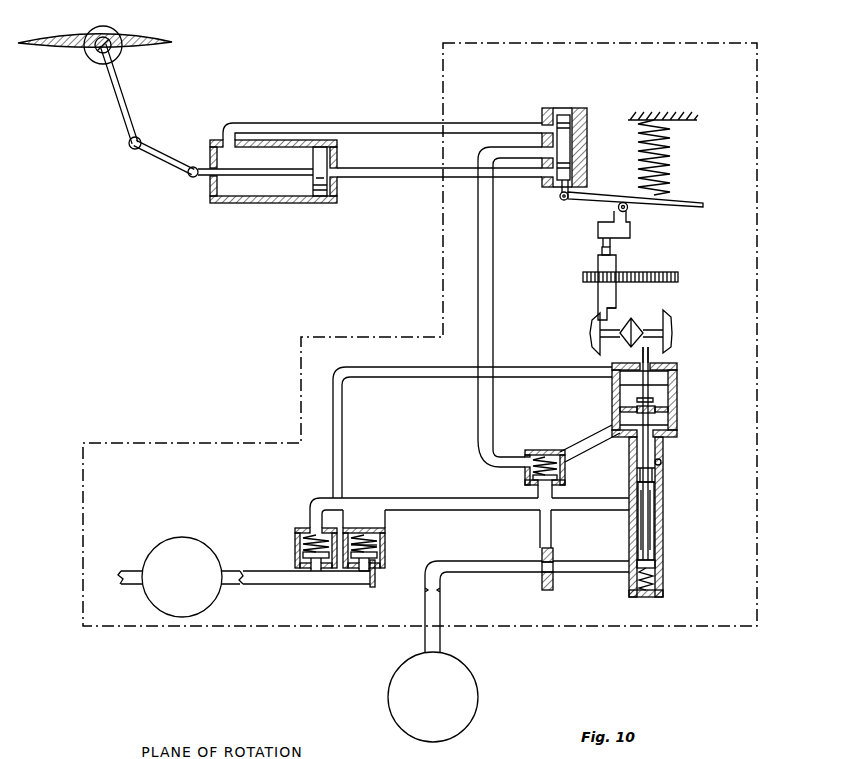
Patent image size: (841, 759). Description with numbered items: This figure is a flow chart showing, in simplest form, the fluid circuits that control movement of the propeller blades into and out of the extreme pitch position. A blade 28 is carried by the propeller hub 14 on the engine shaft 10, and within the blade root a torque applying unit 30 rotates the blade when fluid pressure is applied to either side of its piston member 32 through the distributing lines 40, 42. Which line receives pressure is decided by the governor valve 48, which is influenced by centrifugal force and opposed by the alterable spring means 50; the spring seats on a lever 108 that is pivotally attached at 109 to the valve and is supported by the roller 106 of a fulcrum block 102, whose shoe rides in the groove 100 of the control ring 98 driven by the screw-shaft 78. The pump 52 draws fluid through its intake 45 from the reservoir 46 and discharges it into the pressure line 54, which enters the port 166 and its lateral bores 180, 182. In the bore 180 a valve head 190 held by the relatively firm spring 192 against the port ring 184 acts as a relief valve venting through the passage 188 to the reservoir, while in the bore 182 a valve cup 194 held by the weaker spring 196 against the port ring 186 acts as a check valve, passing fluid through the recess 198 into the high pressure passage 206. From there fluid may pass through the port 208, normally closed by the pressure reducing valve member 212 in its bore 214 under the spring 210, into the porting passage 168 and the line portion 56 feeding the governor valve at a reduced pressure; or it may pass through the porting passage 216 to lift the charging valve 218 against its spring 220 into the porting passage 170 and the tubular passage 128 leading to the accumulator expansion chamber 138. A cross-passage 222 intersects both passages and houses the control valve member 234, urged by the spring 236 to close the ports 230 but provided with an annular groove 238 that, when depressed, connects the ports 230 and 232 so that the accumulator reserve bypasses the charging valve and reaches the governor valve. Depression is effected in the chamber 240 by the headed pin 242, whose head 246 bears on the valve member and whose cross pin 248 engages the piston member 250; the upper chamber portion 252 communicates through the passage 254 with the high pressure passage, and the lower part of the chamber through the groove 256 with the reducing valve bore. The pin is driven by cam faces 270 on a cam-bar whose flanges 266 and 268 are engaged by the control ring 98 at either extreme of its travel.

The engine shaft 10 is at (98, 50).
The propeller hub 14 is at (112, 27).
The blades 28 is at (172, 41).
The servo-motor or torque applying unit 30 is at (265, 204).
The piston member 32 is at (313, 204).
The distributing line 40 is at (470, 128).
The distributing line 42 is at (457, 178).
The intake 45 is at (118, 574).
The reservoir 46 is at (152, 450).
The governor valve 48 is at (565, 120).
The alterable spring means 50 is at (661, 145).
The pump 52 is at (177, 545).
The pressure line 54 is at (263, 586).
The pressure line portion 56 is at (483, 250).
The screw-shaft 78 is at (670, 272).
The control ring 98 is at (598, 260).
The groove 100 is at (605, 310).
The fulcrum block 102 is at (631, 230).
The roller 106 is at (629, 209).
The lever 108 is at (690, 201).
The pivot 109 is at (564, 200).
The tubular lining 128 is at (441, 637).
The expansion chamber 138 is at (462, 675).
The port 166 is at (361, 580).
The porting passage 168 is at (511, 456).
The porting passage 170 is at (467, 561).
The bore 180 is at (364, 540).
The bore 182 is at (298, 535).
The port ring 184 is at (375, 569).
The port ring 186 is at (316, 572).
The passage 188 is at (380, 537).
The valve head 190 is at (385, 560).
The spring 192 is at (386, 545).
The valve cup 194 is at (300, 560).
The spring 196 is at (300, 547).
The recess 198 is at (314, 521).
The passage 206 is at (437, 498).
The port 208 is at (553, 493).
The spring 210 is at (557, 447).
The valve member 212 is at (557, 477).
The bore 214 is at (545, 452).
The porting passage 216 is at (541, 546).
The valve 218 is at (542, 553).
The spring 220 is at (544, 579).
The cross-passage 222 is at (661, 463).
The ports 230 is at (661, 505).
The ports 232 is at (656, 565).
The control valve member 234 is at (655, 474).
The spring 236 is at (656, 581).
The annular groove 238 is at (637, 540).
The chamber 240 is at (665, 426).
The headed pin 242 is at (665, 375).
The head 246 is at (668, 412).
The cross pin 248 is at (652, 400).
The piston member 250 is at (656, 409).
The upper portion of the chamber 252 is at (680, 364).
The passage 254 is at (340, 428).
The groove 256 is at (596, 440).
The flange 266 is at (591, 333).
The flange 268 is at (672, 321).
The cam faces 270 is at (636, 320).